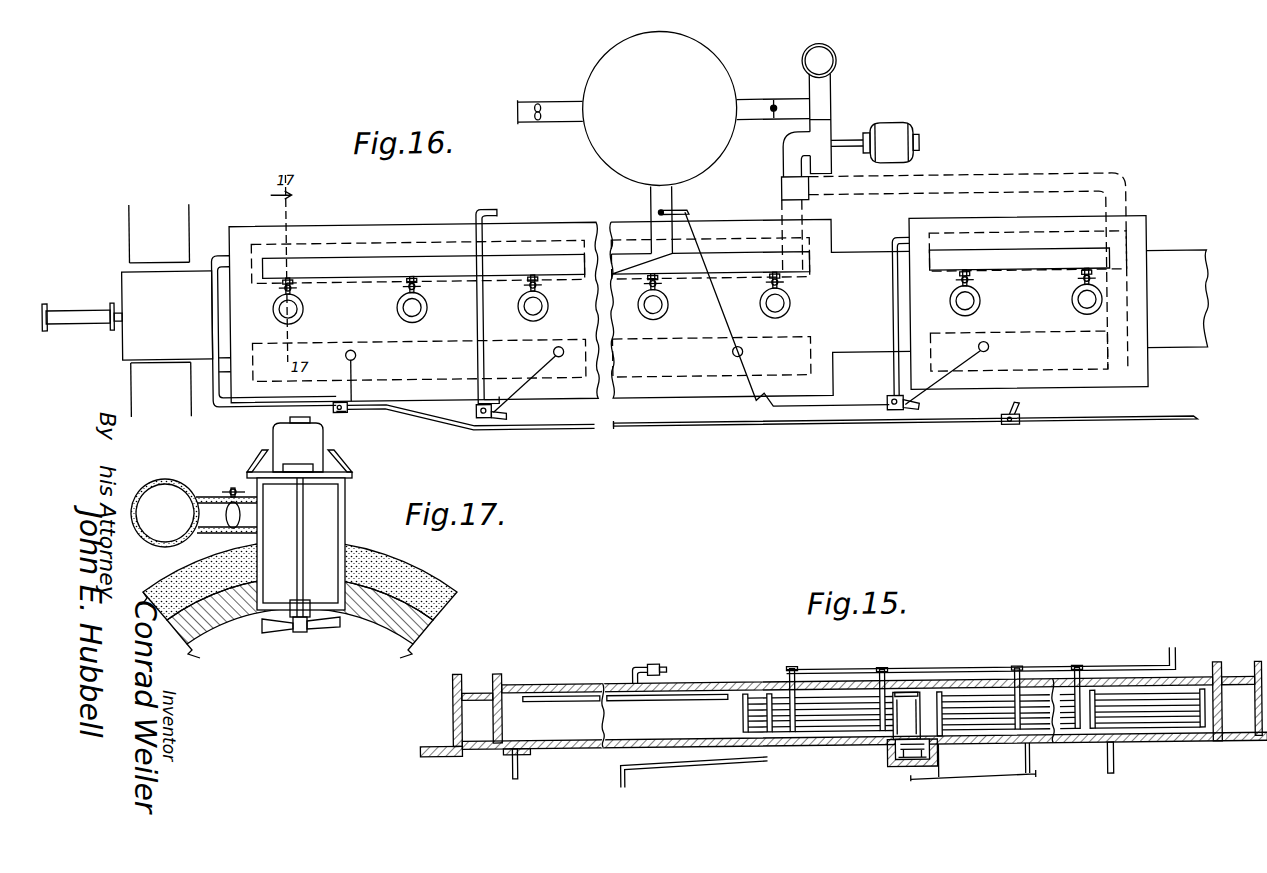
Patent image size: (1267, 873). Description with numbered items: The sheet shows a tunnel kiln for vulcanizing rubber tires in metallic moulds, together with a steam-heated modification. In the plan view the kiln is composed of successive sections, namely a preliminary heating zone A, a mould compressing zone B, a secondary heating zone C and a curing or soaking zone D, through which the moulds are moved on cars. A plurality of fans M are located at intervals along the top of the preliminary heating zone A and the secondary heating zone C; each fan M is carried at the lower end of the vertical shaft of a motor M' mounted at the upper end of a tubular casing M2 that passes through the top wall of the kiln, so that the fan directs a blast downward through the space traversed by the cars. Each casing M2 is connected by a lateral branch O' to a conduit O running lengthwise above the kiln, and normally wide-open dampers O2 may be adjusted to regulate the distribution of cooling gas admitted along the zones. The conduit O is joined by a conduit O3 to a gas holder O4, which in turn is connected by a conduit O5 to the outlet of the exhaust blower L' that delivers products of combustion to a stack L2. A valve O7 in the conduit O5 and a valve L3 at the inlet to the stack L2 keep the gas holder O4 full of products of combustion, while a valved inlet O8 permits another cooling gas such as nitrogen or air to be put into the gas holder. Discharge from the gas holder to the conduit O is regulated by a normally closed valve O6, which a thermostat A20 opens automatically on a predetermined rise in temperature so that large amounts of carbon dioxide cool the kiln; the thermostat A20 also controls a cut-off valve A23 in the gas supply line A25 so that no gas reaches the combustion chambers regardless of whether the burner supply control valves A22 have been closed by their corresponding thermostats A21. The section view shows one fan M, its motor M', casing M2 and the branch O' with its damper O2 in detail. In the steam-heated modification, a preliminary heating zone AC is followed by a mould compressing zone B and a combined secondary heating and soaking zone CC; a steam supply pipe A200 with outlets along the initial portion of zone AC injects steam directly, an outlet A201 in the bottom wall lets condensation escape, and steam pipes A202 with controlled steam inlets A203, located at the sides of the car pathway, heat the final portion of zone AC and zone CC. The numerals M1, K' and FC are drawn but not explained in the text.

In FIG. 16, the conduit O is at (686, 233).
In FIG. 17, the conduit O is at (157, 507).
In FIG. 16, the lateral branch O' is at (666, 291).
In FIG. 17, the lateral branch O' is at (201, 533).
In FIG. 16, the damper O2 is at (297, 283).
In FIG. 17, the damper O2 is at (228, 502).
In FIG. 16, the conduit O3 is at (652, 193).
In FIG. 16, the gas holder O4 is at (600, 84).
In FIG. 16, the conduit O5 is at (759, 100).
In FIG. 16, the valve O6 is at (676, 210).
In FIG. 16, the valve O7 is at (773, 120).
In FIG. 16, the valved inlet O8 is at (557, 116).
In FIG. 16, the blower L' is at (954, 235).
In FIG. 16, the stack L2 is at (839, 62).
In FIG. 16, the valve L3 is at (836, 88).
In FIG. 17, the fan M is at (301, 555).
In FIG. 16, the motor M' is at (688, 314).
In FIG. 16, the tubular casing M2 is at (398, 310).
In FIG. 17, the tubular casing M2 is at (345, 515).
In FIG. 17, the agitator motor M1 is at (275, 433).
In FIG. 16, the preliminary heating zone A is at (414, 312).
In FIG. 16, the mould compressing zone B is at (761, 308).
In FIG. 15, the mould compressing zone B is at (935, 710).
In FIG. 16, the secondary heating zone C is at (1028, 303).
In FIG. 16, the curing or soaking zone D is at (1177, 299).
In FIG. 16, the pipe to compartment C K' is at (984, 315).
In FIG. 16, the thermostat A20 is at (731, 352).
In FIG. 16, the thermostat A21 is at (356, 351).
In FIG. 16, the burner supply control valve A22 is at (342, 409).
In FIG. 16, the cut-off valve A23 is at (1008, 430).
In FIG. 16, the gas supply line A25 is at (1078, 428).
In FIG. 15, the preliminary heating zone AC is at (623, 720).
In FIG. 15, the secondary heating and soaking zone CC is at (984, 690).
In FIG. 15, the chamber FC is at (1176, 688).
In FIG. 15, the steam supply pipe A200 is at (706, 693).
In FIG. 15, the outlet A201 is at (517, 772).
In FIG. 15, the steam pipe A202 is at (843, 700).
In FIG. 15, the steam inlet A203 is at (792, 678).